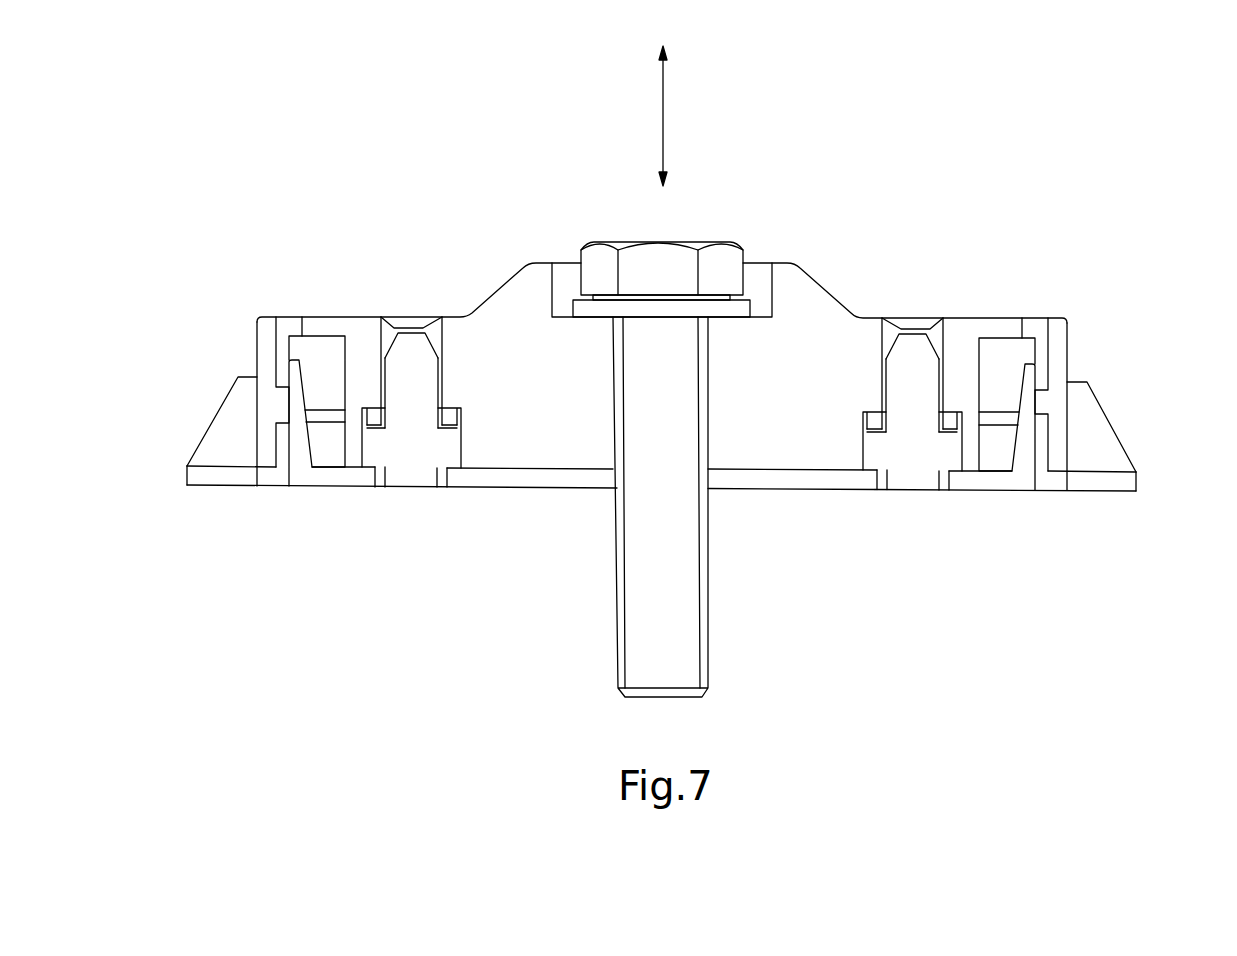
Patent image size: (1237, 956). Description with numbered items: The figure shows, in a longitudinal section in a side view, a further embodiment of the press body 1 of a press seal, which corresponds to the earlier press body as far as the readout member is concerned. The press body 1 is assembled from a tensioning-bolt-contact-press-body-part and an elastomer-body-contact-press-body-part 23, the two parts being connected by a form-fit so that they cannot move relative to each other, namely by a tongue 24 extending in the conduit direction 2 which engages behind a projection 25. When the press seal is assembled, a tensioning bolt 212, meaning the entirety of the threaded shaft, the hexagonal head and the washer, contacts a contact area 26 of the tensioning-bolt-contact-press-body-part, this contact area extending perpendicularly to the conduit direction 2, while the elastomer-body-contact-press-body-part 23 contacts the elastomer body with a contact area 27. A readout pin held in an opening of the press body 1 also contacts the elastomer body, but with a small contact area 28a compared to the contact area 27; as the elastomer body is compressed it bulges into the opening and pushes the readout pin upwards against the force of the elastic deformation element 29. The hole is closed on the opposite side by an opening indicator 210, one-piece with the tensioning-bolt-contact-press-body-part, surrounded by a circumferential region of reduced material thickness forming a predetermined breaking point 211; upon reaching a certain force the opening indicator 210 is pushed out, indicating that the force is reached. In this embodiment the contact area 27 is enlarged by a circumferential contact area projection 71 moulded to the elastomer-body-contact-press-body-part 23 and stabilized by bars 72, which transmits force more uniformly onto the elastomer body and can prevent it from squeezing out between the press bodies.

The press body 1 is at (323, 210).
The conduit direction 2 is at (663, 123).
The elastomer-body-contact-press-body-part 23 is at (778, 482).
The tongue 24 is at (1023, 410).
The projection 25 is at (1045, 406).
The contact area 26 is at (716, 314).
The contact area 27 is at (755, 489).
The contact area 28a is at (908, 489).
The elastic deformation element 29 is at (950, 421).
The contact area projection 71 is at (1103, 482).
The bars 72 is at (1097, 450).
The opening indicator 210 is at (913, 318).
The predetermined breaking point 211 is at (943, 309).
The tensioning bolt 212 is at (636, 382).